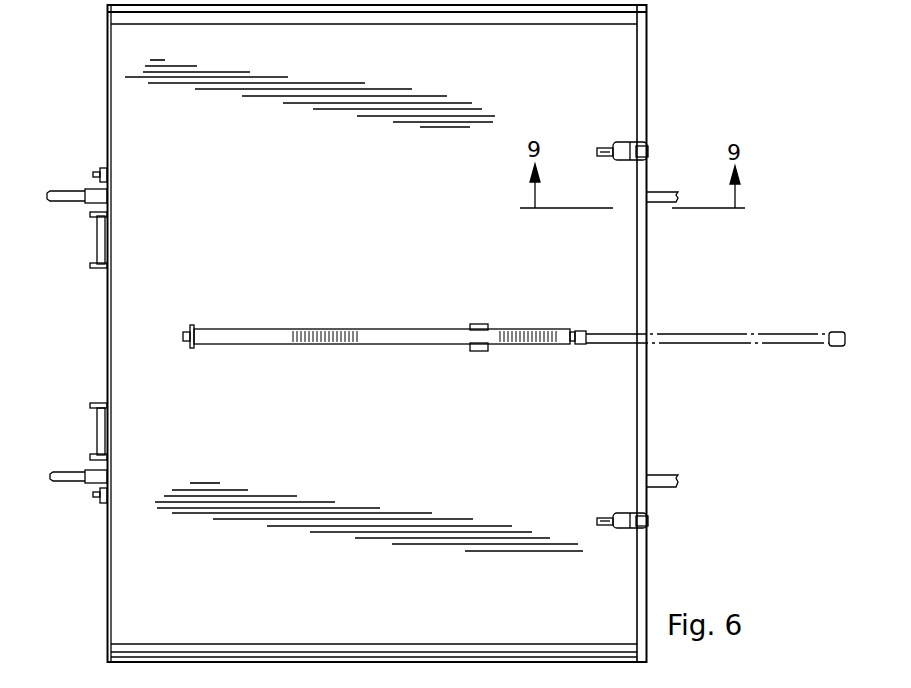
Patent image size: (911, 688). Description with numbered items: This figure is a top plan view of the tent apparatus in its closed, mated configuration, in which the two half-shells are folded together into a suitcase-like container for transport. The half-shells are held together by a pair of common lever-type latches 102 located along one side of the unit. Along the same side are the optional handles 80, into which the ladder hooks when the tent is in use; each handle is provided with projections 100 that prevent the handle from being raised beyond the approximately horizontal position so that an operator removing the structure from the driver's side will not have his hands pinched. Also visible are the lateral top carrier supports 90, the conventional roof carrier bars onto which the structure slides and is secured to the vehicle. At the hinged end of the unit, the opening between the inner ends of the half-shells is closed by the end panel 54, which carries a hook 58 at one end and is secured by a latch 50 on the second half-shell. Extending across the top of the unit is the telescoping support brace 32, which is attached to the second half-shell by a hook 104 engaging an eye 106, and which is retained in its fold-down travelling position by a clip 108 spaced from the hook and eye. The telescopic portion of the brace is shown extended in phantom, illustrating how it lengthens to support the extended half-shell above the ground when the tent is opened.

The telescopic leg 32 is at (398, 345).
The latch 50 is at (620, 143).
The end panel 54 is at (647, 293).
The hook 58 is at (649, 152).
The handles 80 is at (97, 243).
The lateral top carrier supports 90 is at (82, 196).
The projections 100 is at (95, 405).
The lever-type latches 102 is at (103, 169).
The hook 104 is at (185, 333).
The eye 106 is at (196, 328).
The clip 108 is at (474, 325).